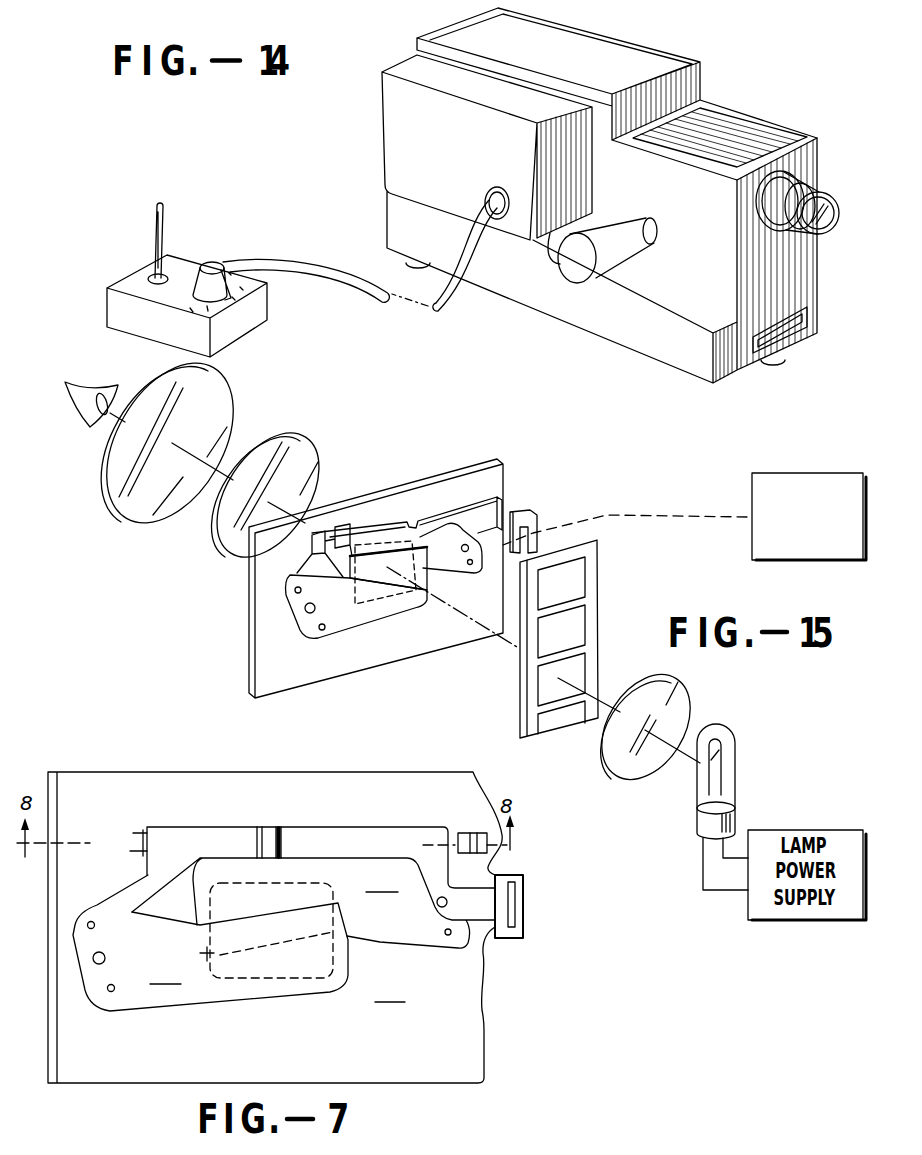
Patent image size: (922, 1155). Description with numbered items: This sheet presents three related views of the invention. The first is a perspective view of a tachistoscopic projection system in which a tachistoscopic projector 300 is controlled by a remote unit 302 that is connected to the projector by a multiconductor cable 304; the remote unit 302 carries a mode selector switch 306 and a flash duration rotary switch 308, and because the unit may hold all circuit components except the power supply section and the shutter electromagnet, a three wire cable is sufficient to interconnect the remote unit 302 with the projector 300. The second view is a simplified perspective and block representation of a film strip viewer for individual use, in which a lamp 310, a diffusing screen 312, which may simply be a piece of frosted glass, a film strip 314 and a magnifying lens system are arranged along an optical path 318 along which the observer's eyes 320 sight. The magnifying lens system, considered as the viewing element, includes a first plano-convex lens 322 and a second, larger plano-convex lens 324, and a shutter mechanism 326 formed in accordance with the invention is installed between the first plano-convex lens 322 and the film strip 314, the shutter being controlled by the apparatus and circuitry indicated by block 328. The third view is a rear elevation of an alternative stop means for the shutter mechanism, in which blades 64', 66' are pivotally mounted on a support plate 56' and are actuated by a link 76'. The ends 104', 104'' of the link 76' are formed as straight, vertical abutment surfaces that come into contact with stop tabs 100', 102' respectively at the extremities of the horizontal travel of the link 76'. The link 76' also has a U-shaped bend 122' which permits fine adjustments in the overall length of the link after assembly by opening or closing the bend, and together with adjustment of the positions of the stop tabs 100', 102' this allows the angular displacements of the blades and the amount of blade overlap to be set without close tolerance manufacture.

In FIG. 14, the tachistoscopic projector 300 is at (652, 36).
In FIG. 14, the remote unit 302 is at (257, 334).
In FIG. 14, the multiconductor cable 304 is at (458, 307).
In FIG. 14, the mode selector switch 306 is at (156, 224).
In FIG. 14, the flash duration rotary switch 308 is at (207, 262).
In FIG. 15, the lamp 310 is at (733, 778).
In FIG. 15, the diffusing screen 312 is at (680, 678).
In FIG. 15, the film strip 314 is at (600, 562).
In FIG. 15, the optical path 318 is at (229, 458).
In FIG. 15, the observer's eyes 320 is at (80, 416).
In FIG. 15, the first plano-convex lens 322 is at (314, 446).
In FIG. 15, the second plano-convex lens 324 is at (230, 382).
In FIG. 15, the shutter mechanism 326 is at (408, 483).
In FIG. 15, the control apparatus and circuitry block 328 is at (751, 485).
In FIG. 7, the support plate 56' is at (285, 927).
In FIG. 7, the blade 64' is at (313, 903).
In FIG. 7, the blade 66' is at (210, 943).
In FIG. 7, the link 76' is at (321, 840).
In FIG. 7, the stop tab 100' is at (119, 822).
In FIG. 7, the stop tab 102' is at (465, 823).
In FIG. 7, the link end 104' is at (159, 824).
In FIG. 7, the link end 104'' is at (433, 823).
In FIG. 7, the U-shaped bend 122' is at (254, 825).